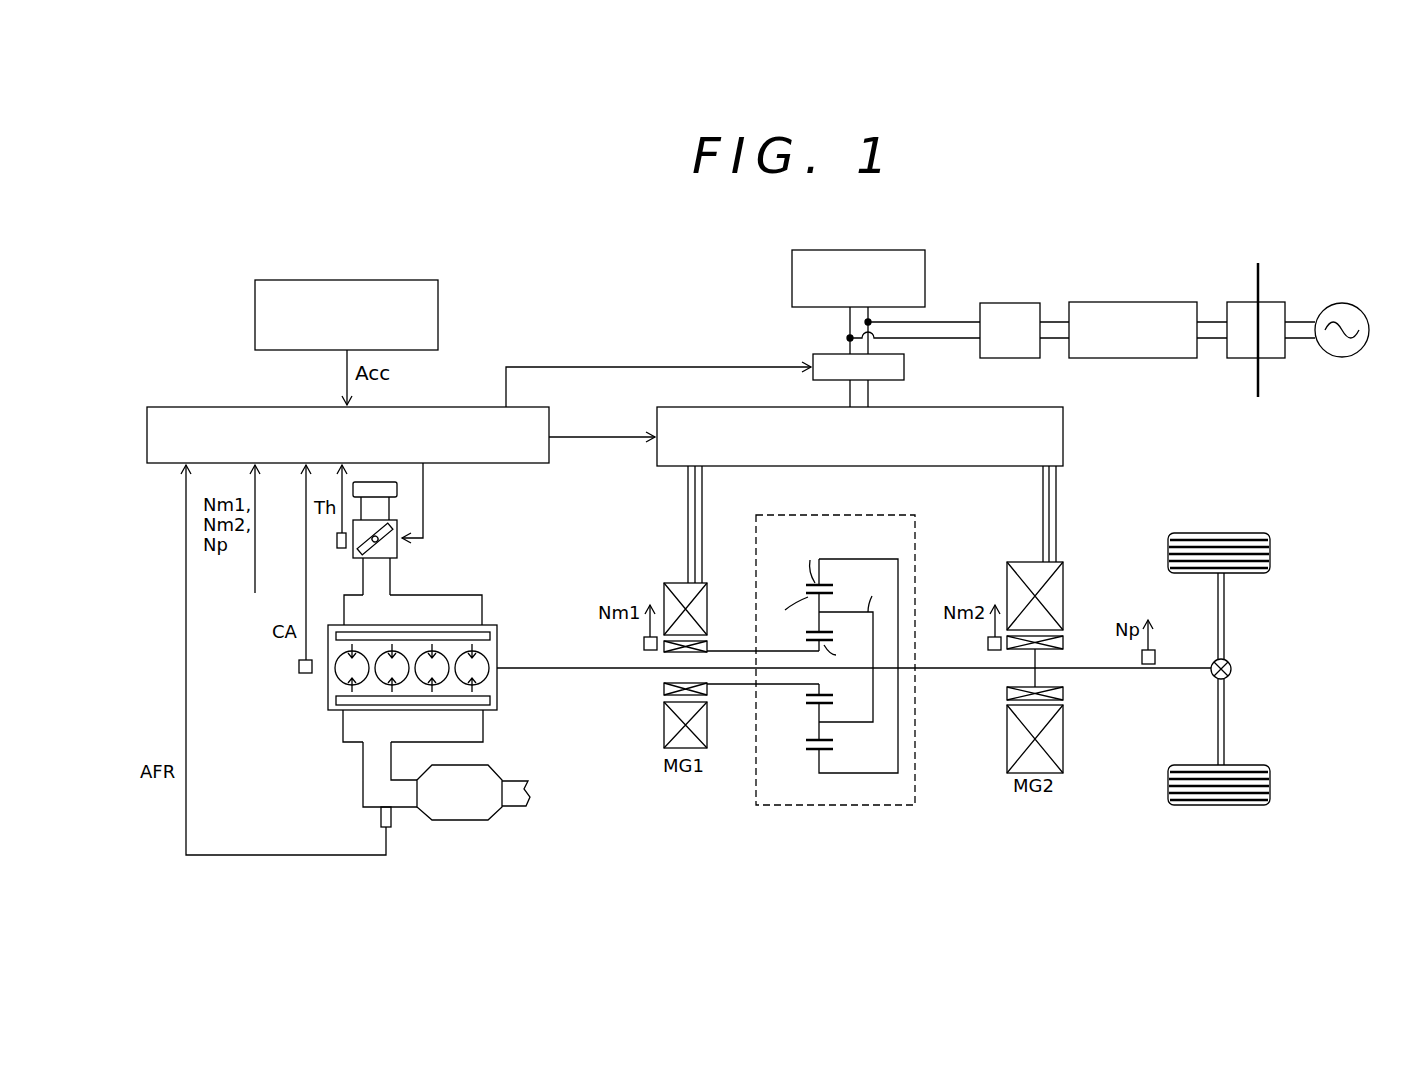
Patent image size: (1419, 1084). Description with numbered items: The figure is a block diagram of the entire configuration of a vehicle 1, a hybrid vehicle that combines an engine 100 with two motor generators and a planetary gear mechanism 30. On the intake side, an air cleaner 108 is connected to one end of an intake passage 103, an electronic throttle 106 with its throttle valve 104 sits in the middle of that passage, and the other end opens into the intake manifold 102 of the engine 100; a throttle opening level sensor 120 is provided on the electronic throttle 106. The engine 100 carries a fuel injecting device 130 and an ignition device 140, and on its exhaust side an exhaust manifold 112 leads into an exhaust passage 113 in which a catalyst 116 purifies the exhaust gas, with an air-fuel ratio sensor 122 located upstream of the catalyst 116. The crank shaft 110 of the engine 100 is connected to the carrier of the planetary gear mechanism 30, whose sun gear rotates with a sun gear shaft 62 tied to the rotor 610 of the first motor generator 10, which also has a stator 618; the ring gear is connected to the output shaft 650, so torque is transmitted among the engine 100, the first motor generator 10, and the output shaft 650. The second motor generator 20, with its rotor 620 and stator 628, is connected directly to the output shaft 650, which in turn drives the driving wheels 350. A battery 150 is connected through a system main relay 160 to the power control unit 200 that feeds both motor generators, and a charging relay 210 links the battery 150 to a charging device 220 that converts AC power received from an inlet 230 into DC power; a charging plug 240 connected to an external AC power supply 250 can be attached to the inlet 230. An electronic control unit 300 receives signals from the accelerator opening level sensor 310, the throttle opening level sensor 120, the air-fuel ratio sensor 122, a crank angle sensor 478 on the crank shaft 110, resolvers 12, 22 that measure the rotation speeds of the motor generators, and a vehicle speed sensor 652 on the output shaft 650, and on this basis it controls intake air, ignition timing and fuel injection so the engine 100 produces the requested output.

The vehicle 1 is at (236, 260).
The accelerator opening level sensor 310 is at (368, 279).
The electronic control unit (ECU) 300 is at (528, 407).
The throttle opening level sensor 120 is at (341, 548).
The crank angle sensor 478 is at (305, 673).
The air cleaner 108 is at (397, 488).
The throttle valve 104 is at (398, 545).
The electronic throttle 106 is at (392, 558).
The intake passage 103 is at (392, 585).
The intake manifold 102 is at (482, 605).
The engine 100 is at (442, 664).
The fuel injecting device 130 is at (497, 634).
The ignition device 140 is at (497, 700).
The exhaust manifold 112 is at (483, 728).
The exhaust passage 113 is at (362, 768).
The catalyst 116 is at (462, 821).
The air-fuel ratio sensor 122 is at (380, 813).
The battery 150 is at (873, 249).
The system main relay (SMR) 160 is at (904, 366).
The power control unit (PCU) 200 is at (976, 407).
The charging relay (CHR) 210 is at (1010, 302).
The charging device 220 is at (1137, 302).
The inlet 230 is at (1240, 300).
The charging plug 240 is at (1277, 300).
The AC power supply 250 is at (1340, 302).
The first motor generator (MG1) 10 is at (670, 581).
The rotor of first motor generator 610 is at (707, 688).
The stator of first motor generator 618 is at (707, 745).
The sun gear shaft 62 is at (730, 650).
The resolver 12 is at (642, 644).
The crank shaft 110 is at (612, 672).
The planetary gear mechanism 30 is at (877, 515).
The second motor generator (MG2) 20 is at (1018, 560).
The rotor of second motor generator 620 is at (1007, 690).
The stator of second motor generator 628 is at (1007, 762).
The resolver 22 is at (987, 645).
The vehicle speed sensor 652 is at (1156, 655).
The output shaft 650 is at (1168, 672).
The driving wheels 350 is at (1240, 532).